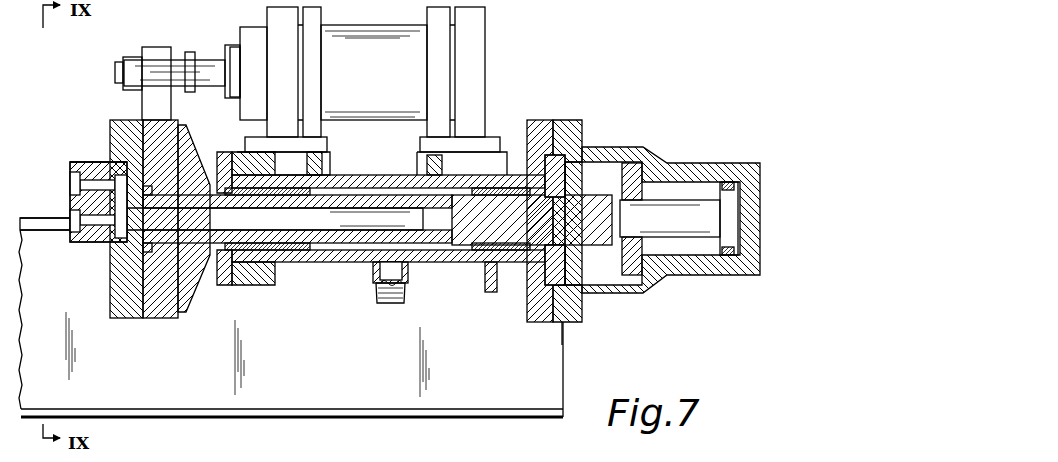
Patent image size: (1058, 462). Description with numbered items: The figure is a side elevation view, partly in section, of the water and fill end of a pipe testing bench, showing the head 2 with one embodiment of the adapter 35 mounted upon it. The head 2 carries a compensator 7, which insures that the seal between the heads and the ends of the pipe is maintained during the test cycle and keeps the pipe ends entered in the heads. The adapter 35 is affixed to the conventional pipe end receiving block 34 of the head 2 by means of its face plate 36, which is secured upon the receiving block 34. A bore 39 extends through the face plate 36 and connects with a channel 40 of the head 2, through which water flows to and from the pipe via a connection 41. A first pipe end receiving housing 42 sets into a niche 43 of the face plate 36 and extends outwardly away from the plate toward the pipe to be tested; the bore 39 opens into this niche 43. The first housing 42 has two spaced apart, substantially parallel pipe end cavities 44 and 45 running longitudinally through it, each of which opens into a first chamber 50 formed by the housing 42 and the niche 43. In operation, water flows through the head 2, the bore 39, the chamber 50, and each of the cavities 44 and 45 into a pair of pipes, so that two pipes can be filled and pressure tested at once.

The head 2 is at (535, 57).
The compensator 7 is at (694, 164).
The pipe end receiving block 34 is at (166, 318).
The adapter 35 is at (90, 133).
The face plate 36 is at (130, 318).
The bore 39 is at (152, 224).
The channel 40 is at (345, 235).
The connection 41 is at (408, 275).
The first pipe end receiving housing 42 is at (68, 244).
The niche 43 is at (113, 165).
The pipe end cavity 44 is at (77, 166).
The pipe end cavity 45 is at (100, 243).
The first chamber 50 is at (122, 213).